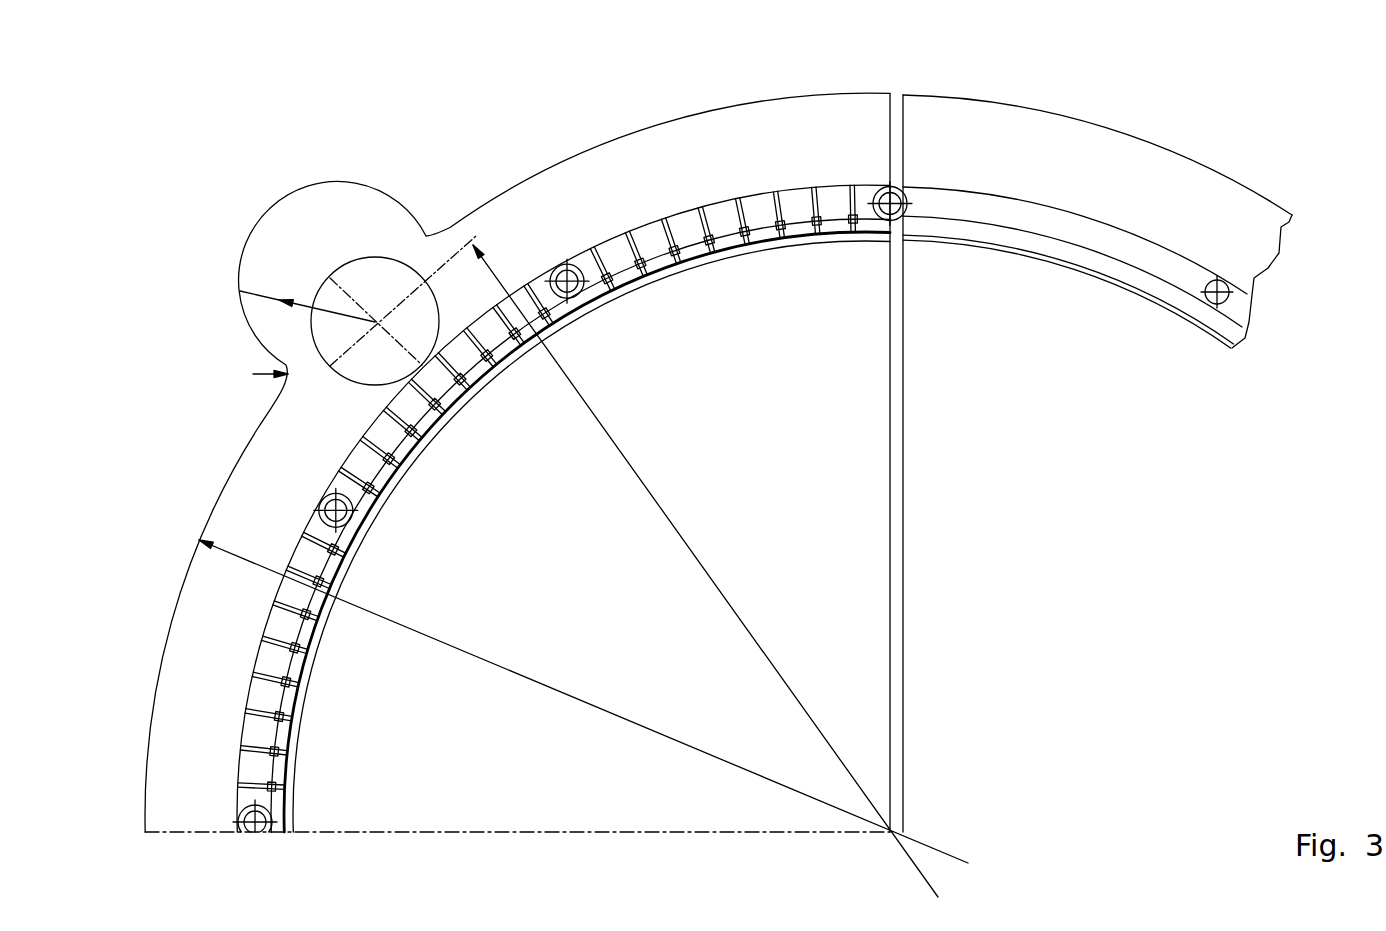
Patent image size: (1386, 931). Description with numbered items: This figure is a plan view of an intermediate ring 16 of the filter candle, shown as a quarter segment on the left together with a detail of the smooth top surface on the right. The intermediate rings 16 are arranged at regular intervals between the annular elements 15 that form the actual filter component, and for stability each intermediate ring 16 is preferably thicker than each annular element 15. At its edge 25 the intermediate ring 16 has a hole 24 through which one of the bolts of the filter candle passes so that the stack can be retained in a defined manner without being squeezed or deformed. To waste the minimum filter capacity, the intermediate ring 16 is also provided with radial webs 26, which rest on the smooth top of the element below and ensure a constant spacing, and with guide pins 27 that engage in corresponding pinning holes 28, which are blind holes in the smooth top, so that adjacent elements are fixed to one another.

The annular element 15 is at (248, 768).
The intermediate ring 16 is at (758, 133).
The hole 24 is at (370, 273).
The edge 25 is at (613, 180).
The radial web 26 is at (672, 232).
The guide pin 27 is at (568, 265).
The pinning hole 28 is at (1212, 287).